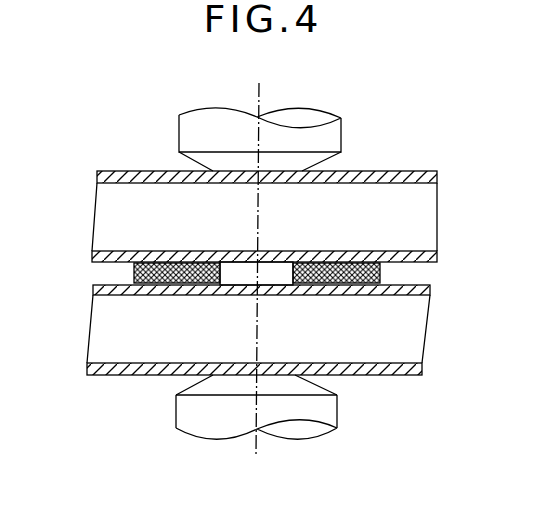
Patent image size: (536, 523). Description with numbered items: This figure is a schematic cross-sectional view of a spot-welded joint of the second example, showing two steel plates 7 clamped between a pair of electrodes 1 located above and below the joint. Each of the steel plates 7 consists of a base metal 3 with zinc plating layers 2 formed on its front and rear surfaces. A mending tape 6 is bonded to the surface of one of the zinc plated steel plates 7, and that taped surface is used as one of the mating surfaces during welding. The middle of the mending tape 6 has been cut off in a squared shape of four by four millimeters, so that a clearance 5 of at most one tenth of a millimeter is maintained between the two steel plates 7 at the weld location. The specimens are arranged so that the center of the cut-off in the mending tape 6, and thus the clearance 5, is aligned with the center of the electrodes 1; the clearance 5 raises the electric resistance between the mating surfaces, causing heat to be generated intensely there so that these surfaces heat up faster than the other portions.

The electrodes 1 is at (324, 135).
The zinc plating layers 2 is at (433, 171).
The base metals 3 is at (430, 215).
The clearance 5 is at (283, 277).
The mending tape 6 is at (380, 272).
The steel plates 7 is at (257, 253).